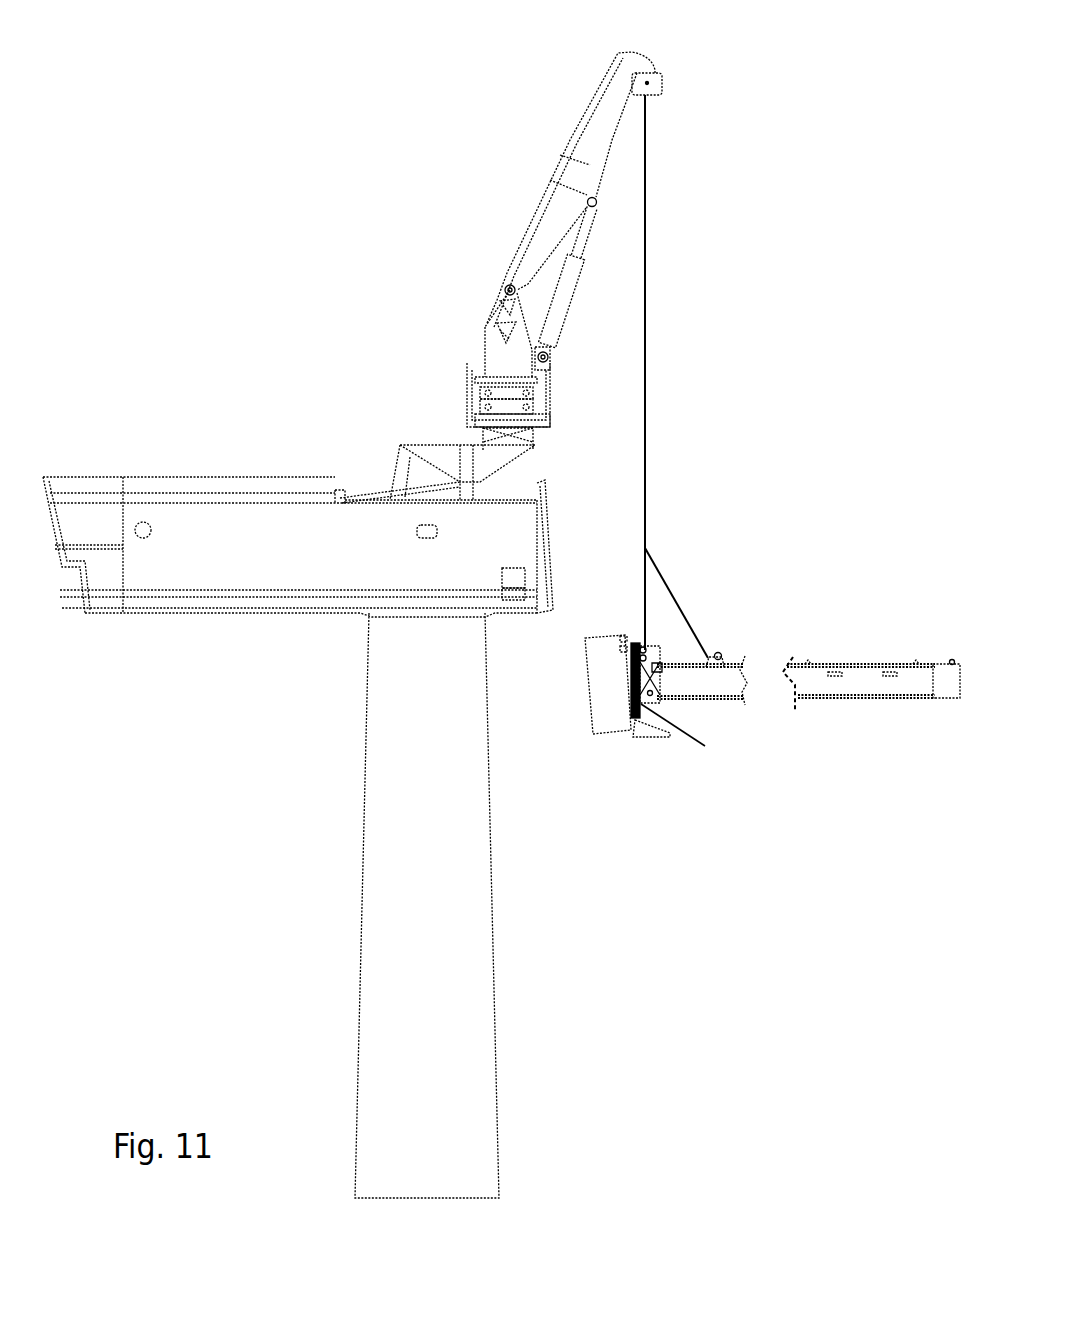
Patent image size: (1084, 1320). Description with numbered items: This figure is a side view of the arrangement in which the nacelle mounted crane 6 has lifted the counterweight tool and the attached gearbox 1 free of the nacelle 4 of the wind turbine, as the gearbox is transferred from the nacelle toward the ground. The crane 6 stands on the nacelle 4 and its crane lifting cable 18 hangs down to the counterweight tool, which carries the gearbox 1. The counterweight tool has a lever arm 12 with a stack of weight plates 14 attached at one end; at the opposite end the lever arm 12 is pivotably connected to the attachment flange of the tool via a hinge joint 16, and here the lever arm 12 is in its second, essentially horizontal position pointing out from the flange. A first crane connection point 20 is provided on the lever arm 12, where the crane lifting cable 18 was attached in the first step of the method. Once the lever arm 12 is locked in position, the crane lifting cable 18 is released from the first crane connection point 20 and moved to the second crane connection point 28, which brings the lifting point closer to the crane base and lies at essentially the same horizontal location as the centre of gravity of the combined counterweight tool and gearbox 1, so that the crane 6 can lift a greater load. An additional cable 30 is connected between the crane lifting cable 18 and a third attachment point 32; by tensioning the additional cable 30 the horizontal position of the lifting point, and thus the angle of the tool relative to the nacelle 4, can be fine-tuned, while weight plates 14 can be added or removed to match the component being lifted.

The gearbox 1 is at (592, 697).
The nacelle 4 is at (238, 483).
The nacelle mounted crane 6 is at (578, 128).
The lever arm 12 is at (860, 672).
The stack of weight plates 14 is at (953, 662).
The hinge joint 16 is at (705, 746).
The crane lifting cable 18 is at (647, 332).
The first crane connection point 20 is at (722, 656).
The second crane connection point 28 is at (643, 647).
The additional cable 30 is at (668, 585).
The third attachment point 32 is at (715, 653).